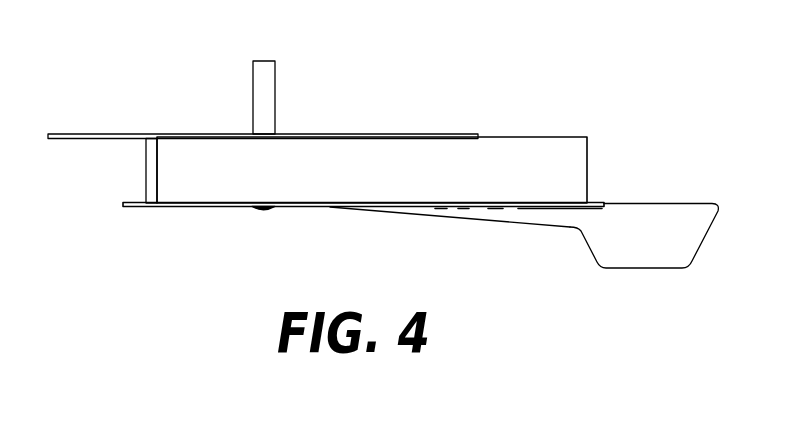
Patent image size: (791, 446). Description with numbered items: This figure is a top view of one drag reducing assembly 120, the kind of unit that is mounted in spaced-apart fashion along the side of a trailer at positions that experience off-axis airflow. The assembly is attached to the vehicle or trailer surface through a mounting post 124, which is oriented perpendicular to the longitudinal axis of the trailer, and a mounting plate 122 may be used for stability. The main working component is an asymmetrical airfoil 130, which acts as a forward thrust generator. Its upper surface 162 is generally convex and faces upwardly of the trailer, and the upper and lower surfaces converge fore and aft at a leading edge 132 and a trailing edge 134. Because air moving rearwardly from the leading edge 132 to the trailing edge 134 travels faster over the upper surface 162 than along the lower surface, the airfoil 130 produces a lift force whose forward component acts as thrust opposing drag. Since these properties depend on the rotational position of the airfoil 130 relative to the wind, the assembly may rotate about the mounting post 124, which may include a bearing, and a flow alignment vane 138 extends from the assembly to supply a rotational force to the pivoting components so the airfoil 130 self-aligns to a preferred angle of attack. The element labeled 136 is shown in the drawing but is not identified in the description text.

The drag reducing assembly 120 is at (528, 98).
The mounting plate 122 is at (104, 133).
The mounting post 124 is at (276, 83).
The asymmetrical airfoil 130 is at (416, 152).
The upper surface 162 is at (350, 172).
The leading edge 132 is at (147, 170).
The trailing edge 134 is at (588, 160).
The bottom plate 136 is at (191, 207).
The flow alignment vane 138 is at (645, 239).